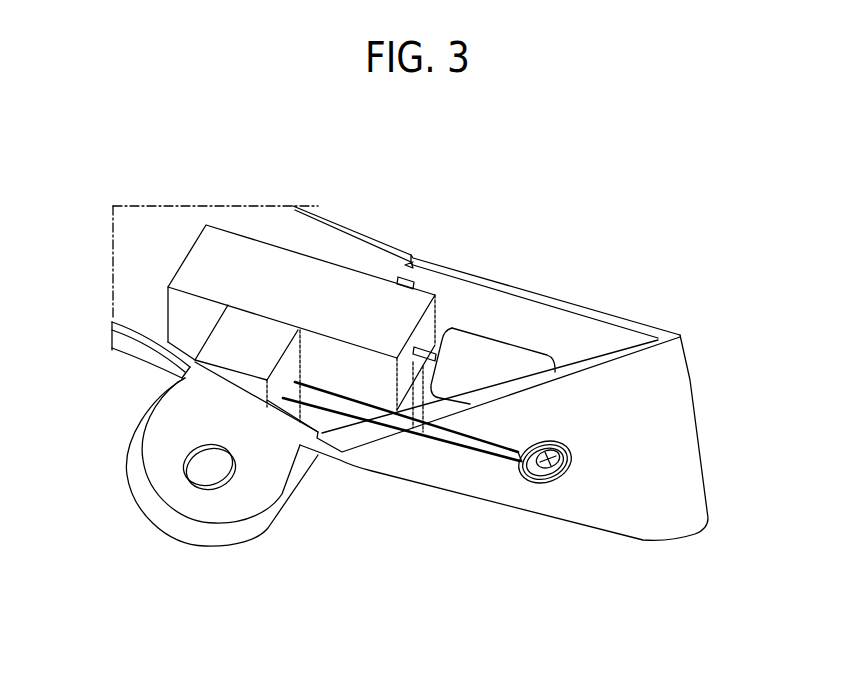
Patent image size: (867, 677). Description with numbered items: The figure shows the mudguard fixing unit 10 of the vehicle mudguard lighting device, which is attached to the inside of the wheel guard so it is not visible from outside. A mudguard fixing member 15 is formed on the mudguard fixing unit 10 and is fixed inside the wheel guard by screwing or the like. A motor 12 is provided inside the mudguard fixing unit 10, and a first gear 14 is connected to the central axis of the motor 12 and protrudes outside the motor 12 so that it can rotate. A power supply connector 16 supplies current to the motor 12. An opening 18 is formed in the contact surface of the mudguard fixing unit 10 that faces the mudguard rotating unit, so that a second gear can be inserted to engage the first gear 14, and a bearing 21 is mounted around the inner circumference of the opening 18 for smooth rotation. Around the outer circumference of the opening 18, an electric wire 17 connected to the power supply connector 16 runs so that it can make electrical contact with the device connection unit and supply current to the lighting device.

The mudguard fixing unit 10 is at (676, 421).
The motor 12 is at (343, 285).
The first gear 14 is at (495, 358).
The mudguard fixing member 15 is at (225, 504).
The power supply connector 16 is at (220, 342).
The electric wire 17 is at (429, 382).
The opening 18 is at (552, 478).
The bearing 21 is at (532, 480).